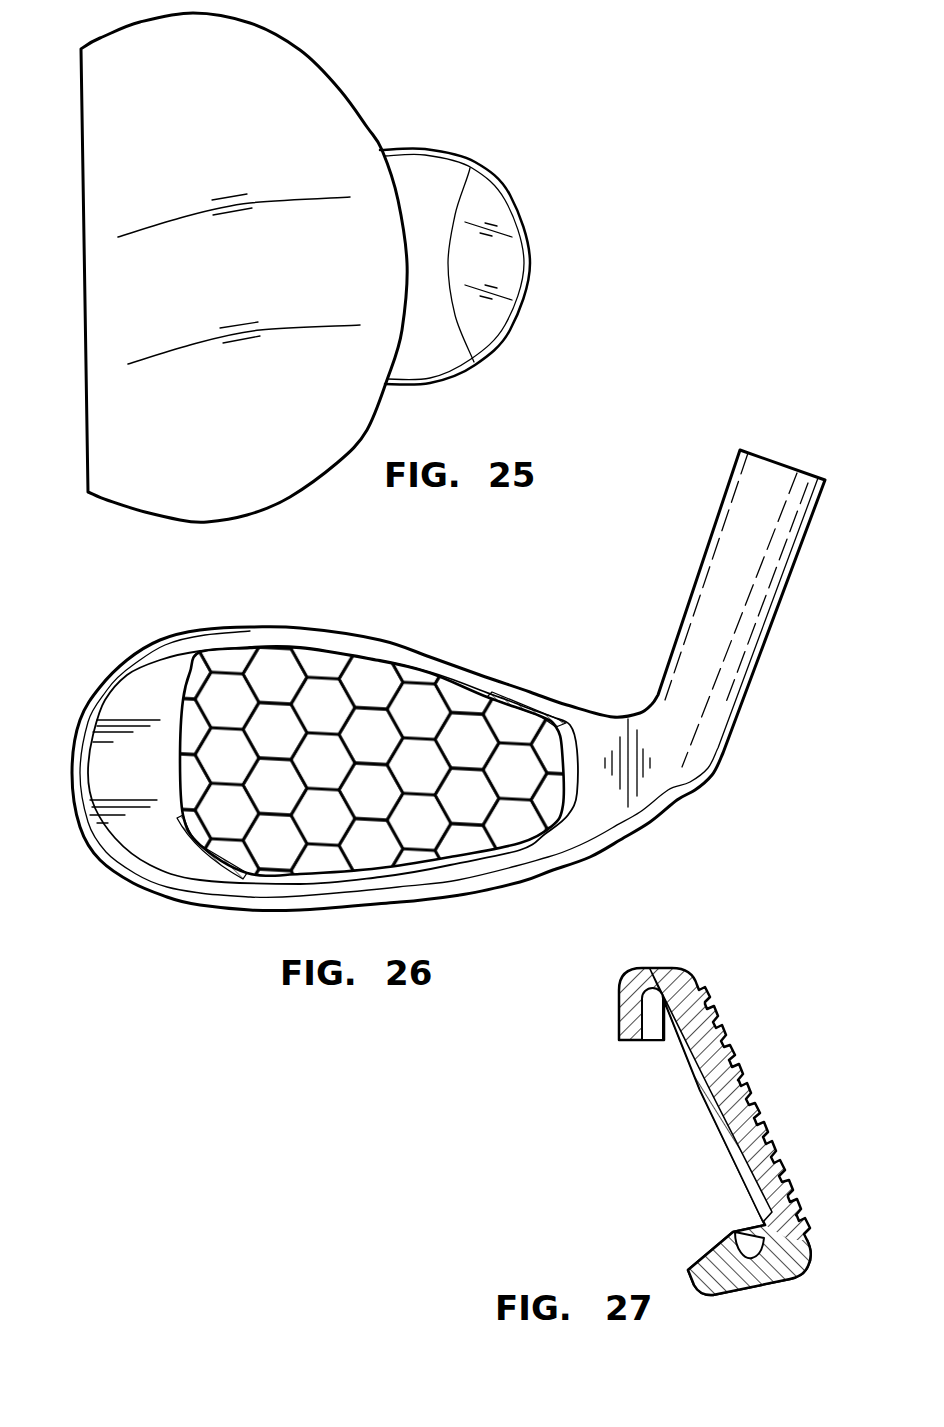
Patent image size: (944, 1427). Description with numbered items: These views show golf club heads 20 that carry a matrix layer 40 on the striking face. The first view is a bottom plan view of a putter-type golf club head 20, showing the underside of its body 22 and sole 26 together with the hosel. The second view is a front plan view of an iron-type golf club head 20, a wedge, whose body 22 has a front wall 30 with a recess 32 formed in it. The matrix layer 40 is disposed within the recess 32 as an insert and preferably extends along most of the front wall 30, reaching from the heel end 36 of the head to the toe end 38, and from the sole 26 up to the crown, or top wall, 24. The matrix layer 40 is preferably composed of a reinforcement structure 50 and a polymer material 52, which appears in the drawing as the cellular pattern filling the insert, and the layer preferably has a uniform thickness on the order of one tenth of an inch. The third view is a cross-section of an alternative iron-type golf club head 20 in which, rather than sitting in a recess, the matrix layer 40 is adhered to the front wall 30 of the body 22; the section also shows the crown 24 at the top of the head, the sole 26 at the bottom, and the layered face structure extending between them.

In FIG. 25, the golf club head 20 is at (305, 267).
In FIG. 26, the golf club head 20 is at (443, 702).
In FIG. 27, the golf club head 20 is at (686, 1119).
In FIG. 26, the body 22 is at (697, 580).
In FIG. 27, the body 22 is at (705, 1253).
In FIG. 26, the crown (top wall) 24 is at (330, 635).
In FIG. 27, the crown (top wall) 24 is at (660, 968).
In FIG. 25, the sole 26 is at (252, 106).
In FIG. 26, the sole 26 is at (165, 894).
In FIG. 27, the sole 26 is at (765, 1283).
In FIG. 26, the front wall 30 is at (327, 741).
In FIG. 27, the front wall 30 is at (725, 1141).
In FIG. 26, the recess 32 is at (567, 720).
In FIG. 26, the heel end 36 is at (835, 602).
In FIG. 26, the toe end 38 is at (43, 694).
In FIG. 26, the matrix layer 40 is at (360, 738).
In FIG. 27, the matrix layer 40 is at (700, 980).
In FIG. 26, the reinforcement structure 50 is at (195, 753).
In FIG. 26, the polymer material 52 is at (478, 733).